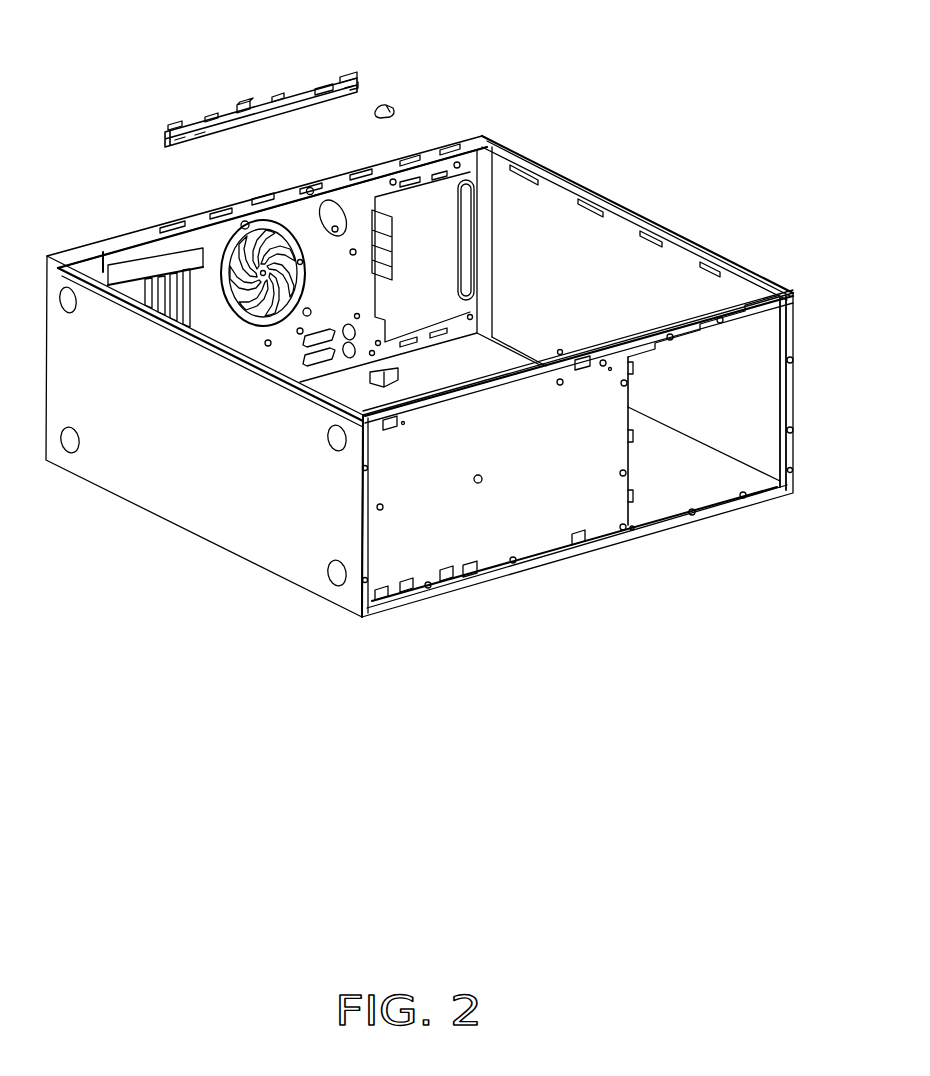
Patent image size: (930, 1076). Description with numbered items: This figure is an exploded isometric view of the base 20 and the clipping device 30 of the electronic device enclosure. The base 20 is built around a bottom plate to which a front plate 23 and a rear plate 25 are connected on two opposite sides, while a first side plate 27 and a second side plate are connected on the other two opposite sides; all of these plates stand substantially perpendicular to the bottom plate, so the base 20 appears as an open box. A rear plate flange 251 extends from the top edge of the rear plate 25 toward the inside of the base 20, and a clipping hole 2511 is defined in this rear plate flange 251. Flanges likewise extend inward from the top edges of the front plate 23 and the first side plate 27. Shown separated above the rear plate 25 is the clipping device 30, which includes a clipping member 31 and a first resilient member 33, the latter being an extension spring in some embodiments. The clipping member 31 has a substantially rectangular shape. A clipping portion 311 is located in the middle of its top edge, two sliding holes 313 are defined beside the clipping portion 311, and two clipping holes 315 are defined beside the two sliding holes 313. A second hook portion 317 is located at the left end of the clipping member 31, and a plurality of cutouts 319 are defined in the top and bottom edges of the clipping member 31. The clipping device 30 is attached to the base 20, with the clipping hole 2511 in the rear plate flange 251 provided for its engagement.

The base 20 is at (419, 392).
The front plate 23 is at (515, 522).
The rear plate 25 is at (128, 277).
The rear plate flange 251 is at (272, 207).
The clipping hole 2511 is at (258, 202).
The first side plate 27 is at (195, 487).
The clipping device 30 is at (292, 102).
The clipping member 31 is at (268, 102).
The clipping portion 311 is at (243, 105).
The sliding holes 313 is at (278, 97).
The clipping holes 315 is at (330, 85).
The second hook portion 317 is at (358, 90).
The cutouts 319 is at (200, 138).
The first resilient member 33 is at (380, 105).